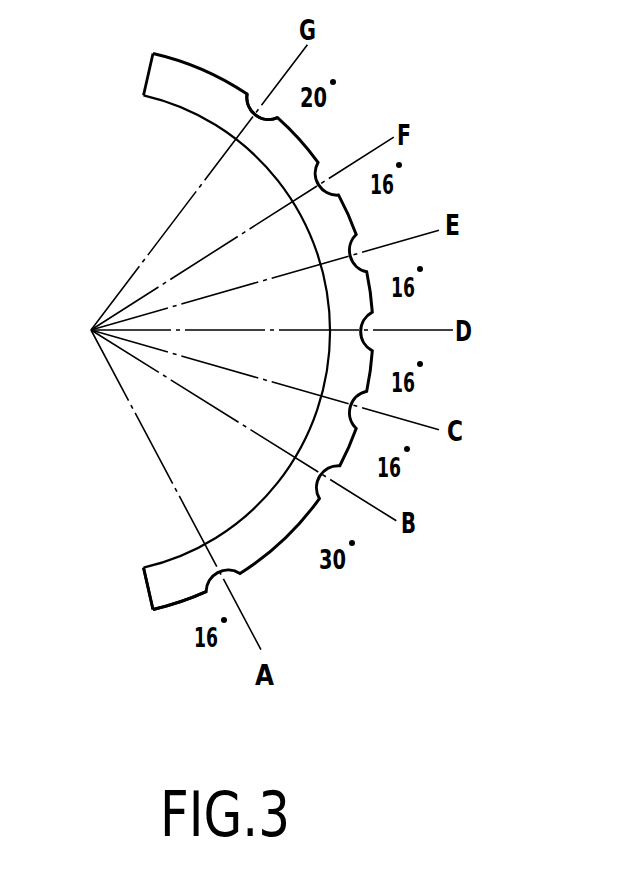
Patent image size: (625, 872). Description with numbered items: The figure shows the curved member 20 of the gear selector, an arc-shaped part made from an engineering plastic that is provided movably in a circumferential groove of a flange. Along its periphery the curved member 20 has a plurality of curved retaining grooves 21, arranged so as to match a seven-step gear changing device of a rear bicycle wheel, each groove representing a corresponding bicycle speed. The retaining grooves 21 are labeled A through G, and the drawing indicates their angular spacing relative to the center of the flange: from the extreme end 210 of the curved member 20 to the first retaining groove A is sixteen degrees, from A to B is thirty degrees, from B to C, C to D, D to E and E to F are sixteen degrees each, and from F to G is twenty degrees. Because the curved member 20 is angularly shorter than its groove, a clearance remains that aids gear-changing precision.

The curved member 20 is at (189, 146).
The curved retaining grooves 21 is at (252, 98).
The extreme end 210 is at (141, 589).